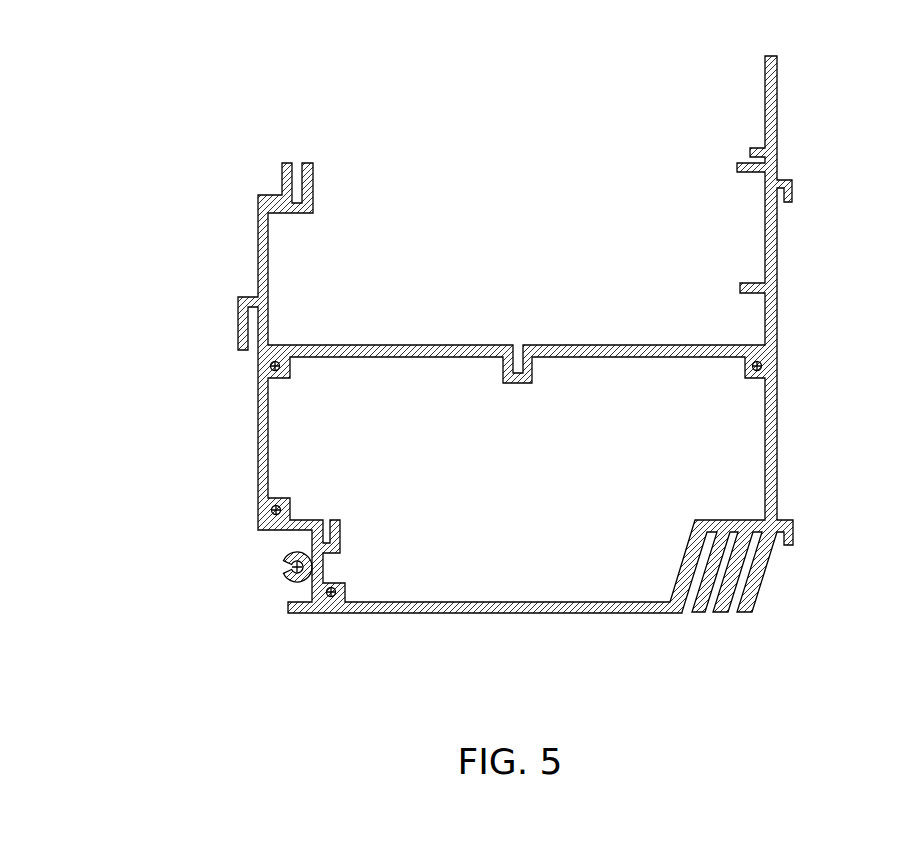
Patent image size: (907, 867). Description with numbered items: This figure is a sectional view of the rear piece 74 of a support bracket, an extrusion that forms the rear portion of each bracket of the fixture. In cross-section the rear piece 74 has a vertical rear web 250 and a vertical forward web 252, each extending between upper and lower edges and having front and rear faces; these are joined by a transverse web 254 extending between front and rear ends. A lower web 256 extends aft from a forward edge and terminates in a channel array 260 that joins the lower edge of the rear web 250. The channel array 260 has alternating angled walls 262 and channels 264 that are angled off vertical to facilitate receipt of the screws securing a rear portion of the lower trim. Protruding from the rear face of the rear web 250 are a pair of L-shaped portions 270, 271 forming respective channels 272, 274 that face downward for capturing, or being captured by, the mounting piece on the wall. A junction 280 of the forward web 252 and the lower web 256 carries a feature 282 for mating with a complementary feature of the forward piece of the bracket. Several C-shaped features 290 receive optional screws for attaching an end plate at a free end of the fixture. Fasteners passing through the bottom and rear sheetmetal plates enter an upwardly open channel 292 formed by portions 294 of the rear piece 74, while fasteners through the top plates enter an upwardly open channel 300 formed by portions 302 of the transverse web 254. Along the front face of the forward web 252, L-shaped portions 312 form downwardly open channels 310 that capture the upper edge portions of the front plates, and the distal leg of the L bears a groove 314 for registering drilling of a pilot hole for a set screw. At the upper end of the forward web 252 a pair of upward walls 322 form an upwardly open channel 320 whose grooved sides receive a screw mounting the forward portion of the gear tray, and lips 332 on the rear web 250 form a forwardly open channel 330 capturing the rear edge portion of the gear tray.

The rear piece/member 74 is at (542, 633).
The vertical rear web 250 is at (773, 273).
The vertical forward web 252 is at (265, 262).
The transverse web 254 is at (626, 357).
The lower web 256 is at (503, 598).
The channel array 260 is at (733, 633).
The angled walls 262 is at (730, 582).
The channels 264 is at (702, 610).
The L-shaped portion 270 is at (797, 176).
The L-shaped portion 271 is at (797, 520).
The channel 272 is at (787, 207).
The channel 274 is at (780, 550).
The junction 280 is at (268, 583).
The feature 282 is at (282, 553).
The C-shaped feature 290 is at (289, 371).
The upwardly open channel 292 is at (327, 517).
The portion 294 is at (357, 522).
The upwardly open channel 300 is at (520, 338).
The portion 302 is at (530, 381).
The downwardly open channel 310 is at (252, 356).
The L-shaped portion 312 is at (236, 313).
The groove 314 is at (236, 330).
The upwardly-open channel 320 is at (297, 162).
The upward walls 322 is at (313, 173).
The forwardly open channel 330 is at (742, 157).
The lips 332 is at (750, 170).